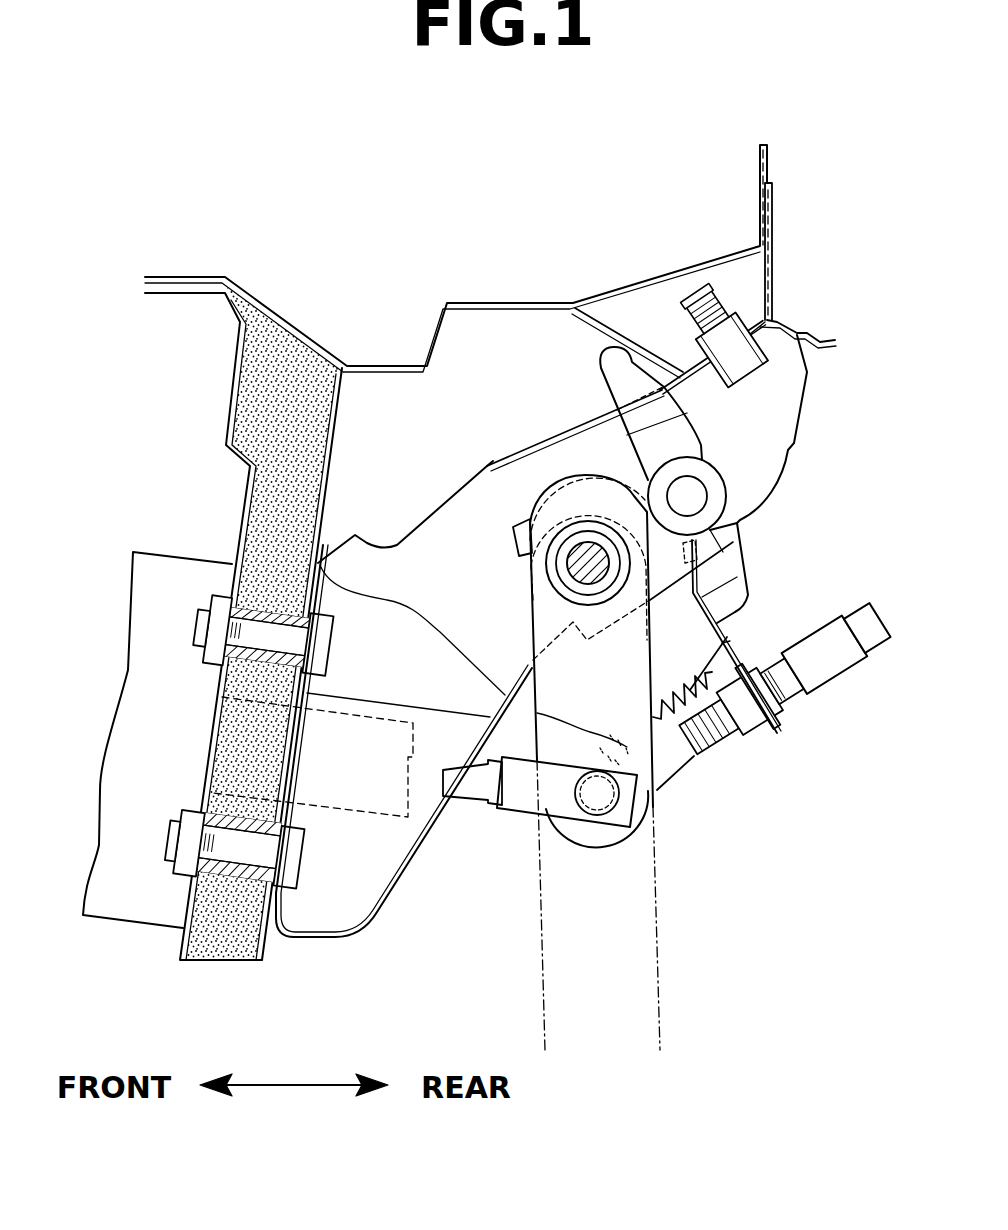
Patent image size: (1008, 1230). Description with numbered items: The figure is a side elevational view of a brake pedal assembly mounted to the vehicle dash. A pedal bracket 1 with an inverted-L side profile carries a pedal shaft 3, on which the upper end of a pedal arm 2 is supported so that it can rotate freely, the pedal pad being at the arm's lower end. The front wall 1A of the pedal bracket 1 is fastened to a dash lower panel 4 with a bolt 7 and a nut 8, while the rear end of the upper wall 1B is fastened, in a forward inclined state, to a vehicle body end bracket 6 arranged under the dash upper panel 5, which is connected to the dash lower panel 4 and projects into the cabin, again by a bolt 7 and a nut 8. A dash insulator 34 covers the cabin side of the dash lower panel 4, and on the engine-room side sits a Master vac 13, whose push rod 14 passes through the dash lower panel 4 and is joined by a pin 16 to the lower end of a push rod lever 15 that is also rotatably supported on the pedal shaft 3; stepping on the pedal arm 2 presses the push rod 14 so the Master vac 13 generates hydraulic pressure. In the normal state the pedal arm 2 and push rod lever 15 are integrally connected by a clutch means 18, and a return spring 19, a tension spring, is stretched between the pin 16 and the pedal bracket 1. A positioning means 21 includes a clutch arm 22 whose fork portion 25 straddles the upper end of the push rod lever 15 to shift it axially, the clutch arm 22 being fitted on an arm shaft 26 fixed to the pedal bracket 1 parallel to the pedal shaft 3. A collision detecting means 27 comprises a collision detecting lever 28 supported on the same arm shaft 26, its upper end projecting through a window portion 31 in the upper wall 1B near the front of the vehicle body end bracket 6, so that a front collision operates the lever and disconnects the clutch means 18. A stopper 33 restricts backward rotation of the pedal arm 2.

The pedal bracket 1 is at (438, 700).
The front wall 1A is at (275, 897).
The upper wall 1B is at (488, 468).
The pedal arm 2 is at (545, 1004).
The pedal shaft 3 is at (570, 563).
The dash lower panel 4 is at (244, 663).
The dash upper panel 5 is at (768, 163).
The vehicle body end bracket 6 is at (773, 267).
The bolt 7 is at (330, 645).
The nut 8 is at (446, 585).
The Master vac 13 is at (145, 922).
The push rod 14 is at (467, 785).
The push rod lever 15 is at (573, 837).
The pin 16 is at (595, 798).
The clutch means 18 is at (784, 679).
The return spring 19 is at (690, 670).
The positioning means 21 is at (784, 661).
The clutch arm 22 is at (707, 541).
The fork portion 25 is at (515, 533).
The arm shaft 26 is at (692, 490).
The collision detecting means 27 is at (593, 364).
The collision detecting lever 28 is at (636, 429).
The window portion 31 is at (533, 443).
The stopper 33 is at (697, 763).
The dash insulator 34 is at (230, 947).